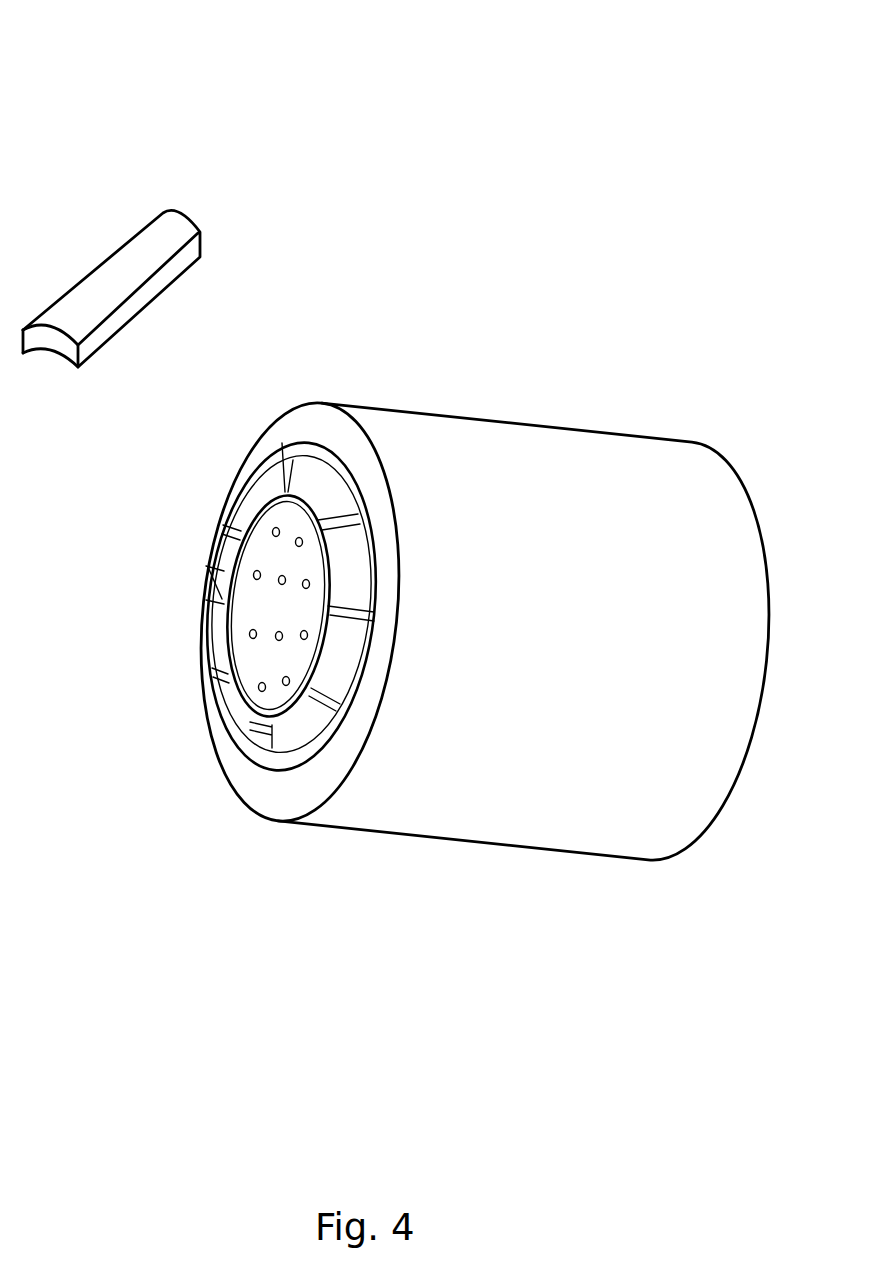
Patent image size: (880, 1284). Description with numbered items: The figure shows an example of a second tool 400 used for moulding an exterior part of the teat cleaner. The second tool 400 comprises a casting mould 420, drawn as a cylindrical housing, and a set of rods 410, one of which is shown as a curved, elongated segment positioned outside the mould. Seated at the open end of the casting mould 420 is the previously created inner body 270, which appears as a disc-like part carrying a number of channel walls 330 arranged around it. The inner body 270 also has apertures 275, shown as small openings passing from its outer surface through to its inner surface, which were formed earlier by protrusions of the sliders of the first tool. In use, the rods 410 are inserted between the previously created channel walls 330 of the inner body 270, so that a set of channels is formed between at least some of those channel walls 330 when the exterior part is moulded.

The second tool 400 is at (737, 72).
The rods 410 is at (120, 288).
The casting mould 420 is at (484, 420).
The inner body 270 is at (225, 570).
The aperture 275 is at (250, 634).
The channel walls 330 is at (322, 522).